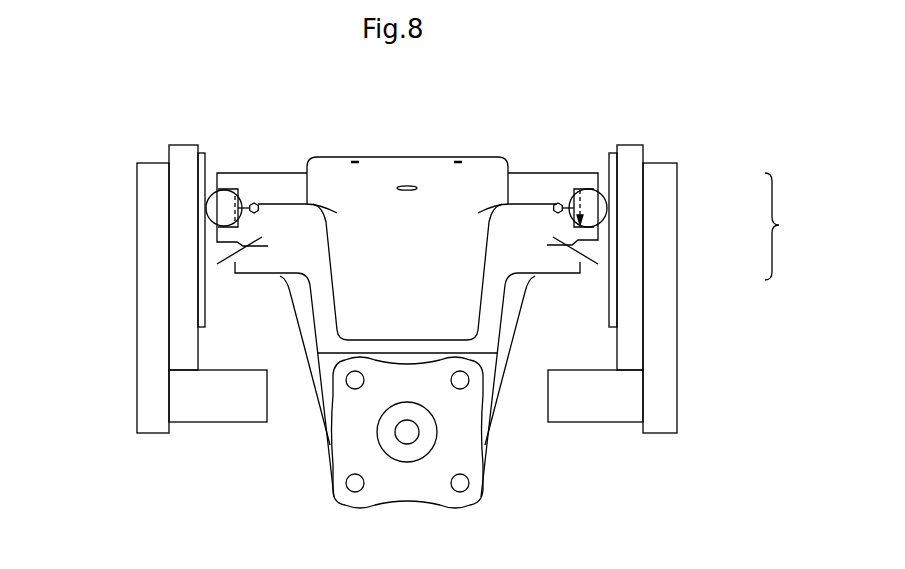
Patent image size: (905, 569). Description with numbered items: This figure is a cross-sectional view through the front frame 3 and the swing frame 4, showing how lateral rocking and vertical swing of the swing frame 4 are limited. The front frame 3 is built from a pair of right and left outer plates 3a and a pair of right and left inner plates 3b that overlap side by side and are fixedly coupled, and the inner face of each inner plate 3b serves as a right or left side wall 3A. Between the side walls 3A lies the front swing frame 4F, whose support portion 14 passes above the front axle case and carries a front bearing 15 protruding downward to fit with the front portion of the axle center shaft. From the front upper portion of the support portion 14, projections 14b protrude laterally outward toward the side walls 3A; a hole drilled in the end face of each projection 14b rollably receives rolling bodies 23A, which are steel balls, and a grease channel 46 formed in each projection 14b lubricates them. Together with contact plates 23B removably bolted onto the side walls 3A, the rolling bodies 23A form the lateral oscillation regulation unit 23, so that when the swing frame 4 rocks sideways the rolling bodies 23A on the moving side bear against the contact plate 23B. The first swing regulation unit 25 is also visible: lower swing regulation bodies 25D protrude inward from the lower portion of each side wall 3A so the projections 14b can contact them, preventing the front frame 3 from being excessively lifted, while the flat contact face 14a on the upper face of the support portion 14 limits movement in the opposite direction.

The front frame 3 is at (631, 246).
The side wall 3A is at (610, 167).
The outer plate 3a is at (628, 158).
The inner plate 3b is at (677, 268).
The swing frame 4 is at (200, 255).
The front swing frame 4F is at (438, 157).
The support portion 14 is at (308, 153).
The flat contact face 14a is at (363, 192).
The projection 14b is at (262, 263).
The front bearing 15 is at (340, 428).
The lateral oscillation regulation unit 23 is at (213, 168).
The rolling body 23A is at (612, 213).
The contact plate 23B is at (612, 202).
The first swing regulation unit 25 is at (208, 452).
The lower swing regulation body 25D is at (210, 413).
The grease channel 46 is at (553, 215).